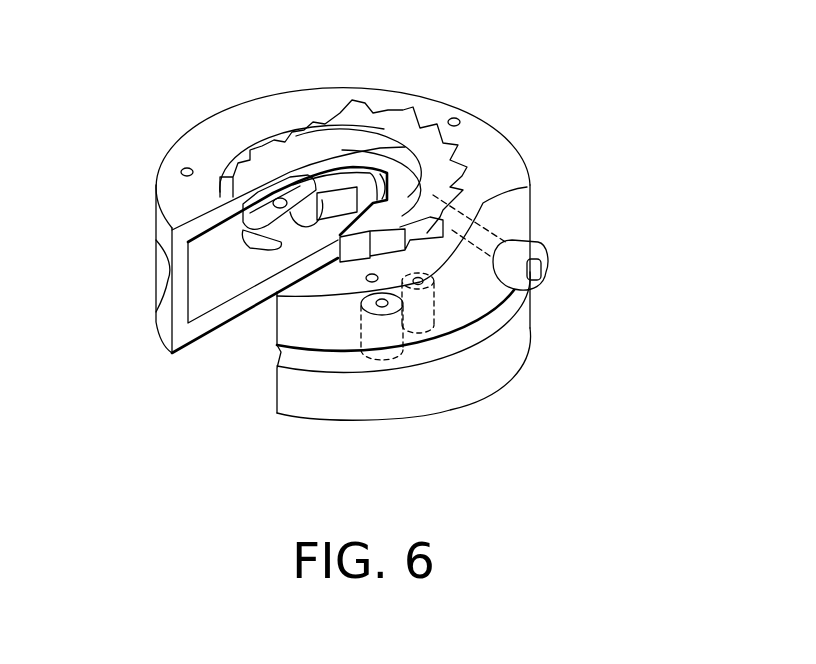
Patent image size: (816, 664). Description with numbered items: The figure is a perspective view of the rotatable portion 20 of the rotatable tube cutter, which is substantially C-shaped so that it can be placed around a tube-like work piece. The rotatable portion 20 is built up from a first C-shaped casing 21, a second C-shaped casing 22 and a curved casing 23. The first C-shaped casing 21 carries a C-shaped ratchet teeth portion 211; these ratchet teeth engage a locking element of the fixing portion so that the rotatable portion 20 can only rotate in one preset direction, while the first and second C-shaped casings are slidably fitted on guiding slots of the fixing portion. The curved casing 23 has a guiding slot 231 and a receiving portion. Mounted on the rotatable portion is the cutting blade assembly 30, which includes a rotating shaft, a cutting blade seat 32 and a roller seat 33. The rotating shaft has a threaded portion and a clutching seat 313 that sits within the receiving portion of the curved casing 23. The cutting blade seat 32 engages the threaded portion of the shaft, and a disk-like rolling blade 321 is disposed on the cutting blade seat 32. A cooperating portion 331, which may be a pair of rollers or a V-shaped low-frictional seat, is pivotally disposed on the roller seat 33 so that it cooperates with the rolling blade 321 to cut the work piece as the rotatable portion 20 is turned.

The rotatable portion 20 is at (497, 113).
The first C-shaped casing 21 is at (200, 218).
The C-shaped ratchet teeth portion 211 is at (403, 120).
The second C-shaped casing 22 is at (200, 325).
The curved casing 23 is at (433, 393).
The guiding slot 231 is at (467, 337).
The clutching seat 313 is at (545, 262).
The cutting blade assembly 30 is at (353, 167).
The cutting blade seat 32 is at (303, 183).
The rolling blade 321 is at (188, 250).
The roller seat 33 is at (423, 280).
The cooperating portion 331 is at (358, 330).